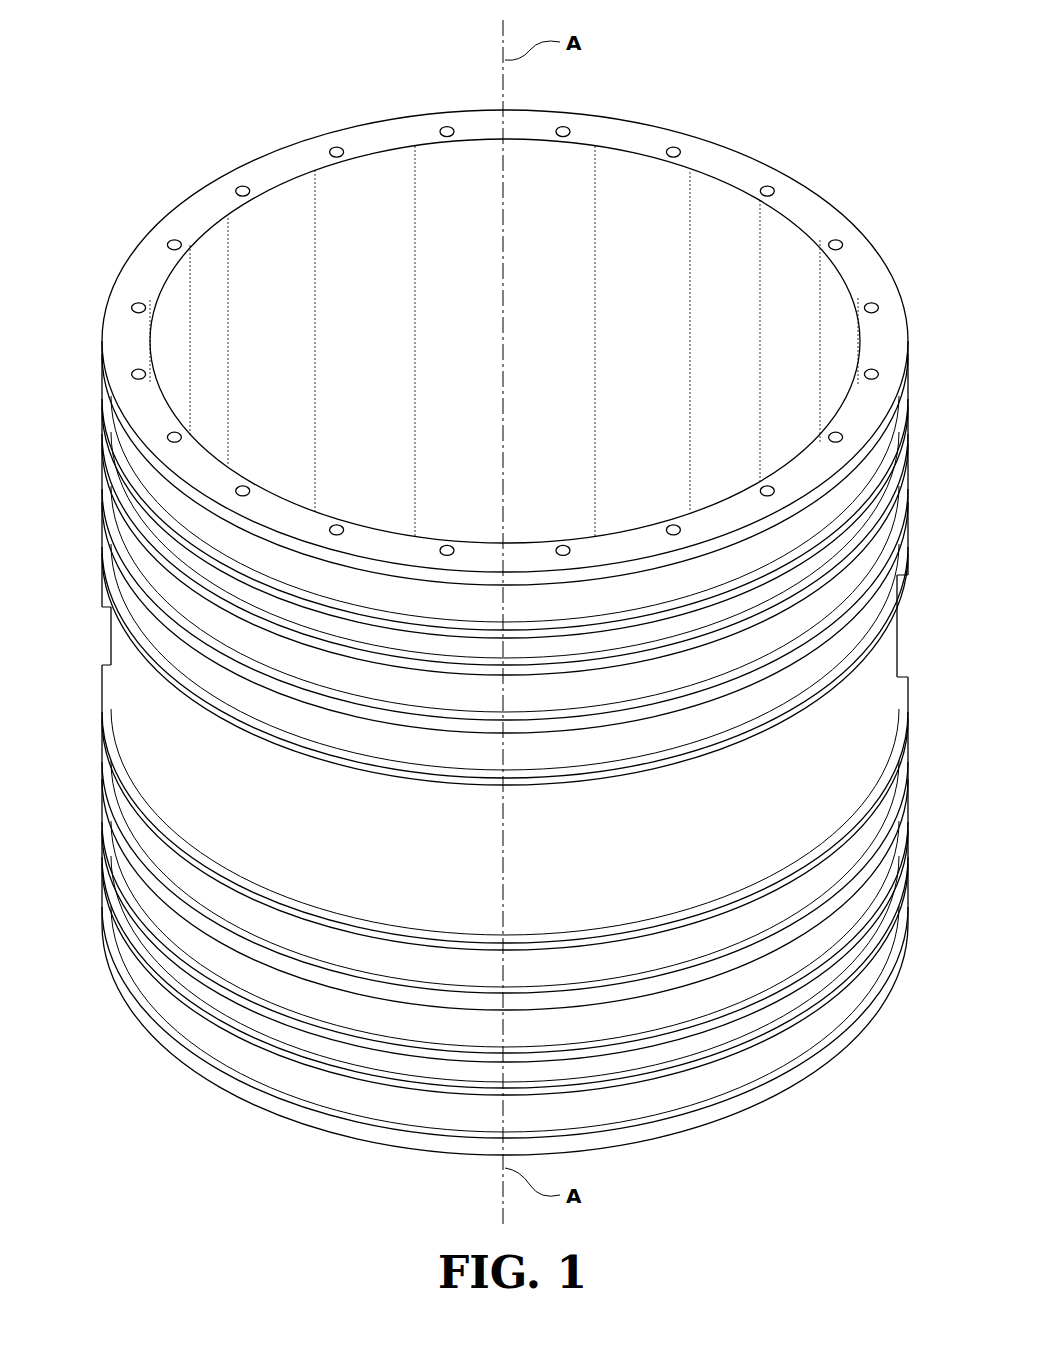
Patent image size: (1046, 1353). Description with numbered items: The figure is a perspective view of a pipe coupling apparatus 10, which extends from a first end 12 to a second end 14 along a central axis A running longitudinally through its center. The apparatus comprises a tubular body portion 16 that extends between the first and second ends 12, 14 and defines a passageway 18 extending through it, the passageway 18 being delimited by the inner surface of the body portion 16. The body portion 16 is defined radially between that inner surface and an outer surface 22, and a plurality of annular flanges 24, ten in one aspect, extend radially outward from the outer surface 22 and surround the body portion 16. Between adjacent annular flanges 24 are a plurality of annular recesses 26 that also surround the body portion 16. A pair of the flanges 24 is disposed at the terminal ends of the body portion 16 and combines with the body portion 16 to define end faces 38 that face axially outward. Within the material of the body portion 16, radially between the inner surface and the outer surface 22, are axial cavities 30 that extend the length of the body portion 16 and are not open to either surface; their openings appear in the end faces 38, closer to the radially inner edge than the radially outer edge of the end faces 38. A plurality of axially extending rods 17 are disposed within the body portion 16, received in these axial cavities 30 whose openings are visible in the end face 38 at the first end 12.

The pipe coupling apparatus 10 is at (864, 114).
The first end 12 is at (662, 120).
The second end 14 is at (234, 1100).
The tubular body portion 16 is at (106, 318).
The axially extending rods 17 is at (840, 240).
The axial cavities 30 is at (505, 341).
The passageway 18 is at (272, 235).
The outer surface 22 is at (110, 634).
The annular flanges 24 is at (896, 742).
The annular recesses 26 is at (790, 1060).
The end faces 38 is at (804, 200).